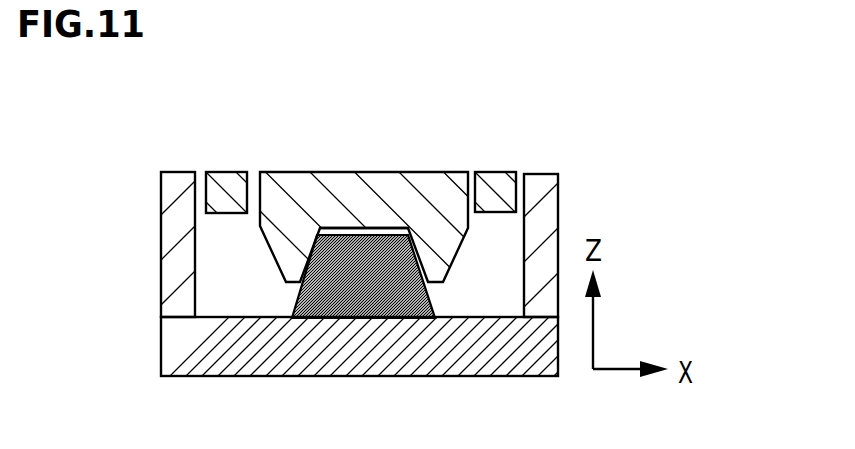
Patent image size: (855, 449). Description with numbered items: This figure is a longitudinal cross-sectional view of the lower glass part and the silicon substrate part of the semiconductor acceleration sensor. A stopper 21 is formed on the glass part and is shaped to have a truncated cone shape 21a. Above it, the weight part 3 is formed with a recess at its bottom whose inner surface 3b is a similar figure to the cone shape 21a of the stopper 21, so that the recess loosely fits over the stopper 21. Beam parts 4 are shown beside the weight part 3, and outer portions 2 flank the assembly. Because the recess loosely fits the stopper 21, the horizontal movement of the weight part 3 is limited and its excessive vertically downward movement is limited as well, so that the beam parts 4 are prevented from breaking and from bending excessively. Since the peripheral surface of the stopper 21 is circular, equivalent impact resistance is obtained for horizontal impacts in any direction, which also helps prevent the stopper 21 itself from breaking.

The side wall 2 is at (176, 180).
The weight part 3 is at (377, 177).
The inner surface 3b is at (326, 238).
The beam parts 4 is at (227, 178).
The stopper 21 is at (343, 310).
The truncated cone shape 21a is at (432, 295).